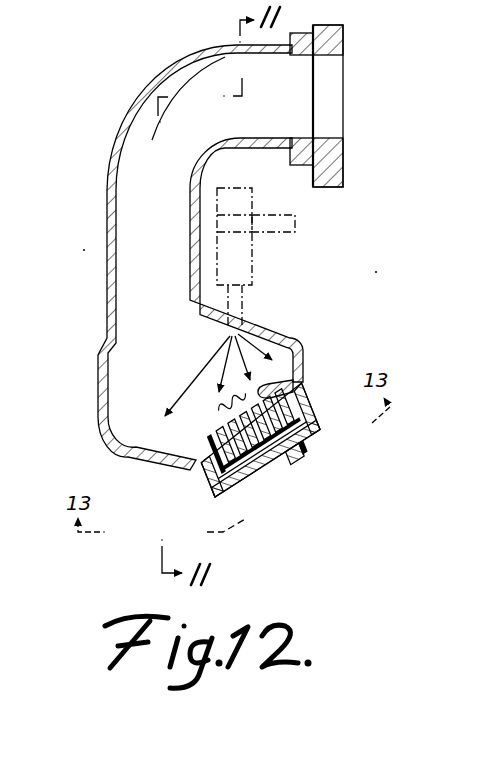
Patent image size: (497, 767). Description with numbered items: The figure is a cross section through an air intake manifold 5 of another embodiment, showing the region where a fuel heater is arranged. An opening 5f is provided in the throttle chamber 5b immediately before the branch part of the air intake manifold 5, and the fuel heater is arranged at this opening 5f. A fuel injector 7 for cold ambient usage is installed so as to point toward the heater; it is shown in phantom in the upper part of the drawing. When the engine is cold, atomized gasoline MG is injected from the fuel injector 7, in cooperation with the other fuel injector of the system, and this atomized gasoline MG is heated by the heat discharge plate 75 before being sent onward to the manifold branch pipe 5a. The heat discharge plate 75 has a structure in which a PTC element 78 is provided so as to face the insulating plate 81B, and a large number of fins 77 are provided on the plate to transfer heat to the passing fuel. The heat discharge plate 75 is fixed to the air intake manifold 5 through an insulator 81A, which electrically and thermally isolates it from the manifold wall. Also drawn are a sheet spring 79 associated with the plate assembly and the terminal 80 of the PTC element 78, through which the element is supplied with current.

The air intake manifold 5 is at (201, 247).
The manifold branch pipe 5a is at (108, 184).
The throttle chamber 5b is at (98, 412).
The opening 5f is at (301, 370).
The fuel injector 7 is at (251, 212).
The atomized gasoline MG is at (193, 373).
The heat discharge plate 75 is at (250, 488).
The fins 77 is at (232, 406).
The PTC element 78 is at (254, 452).
The sheet spring 79 is at (296, 462).
The terminal 80 is at (303, 462).
The insulator 81A is at (206, 484).
The insulating plate 81B is at (320, 432).